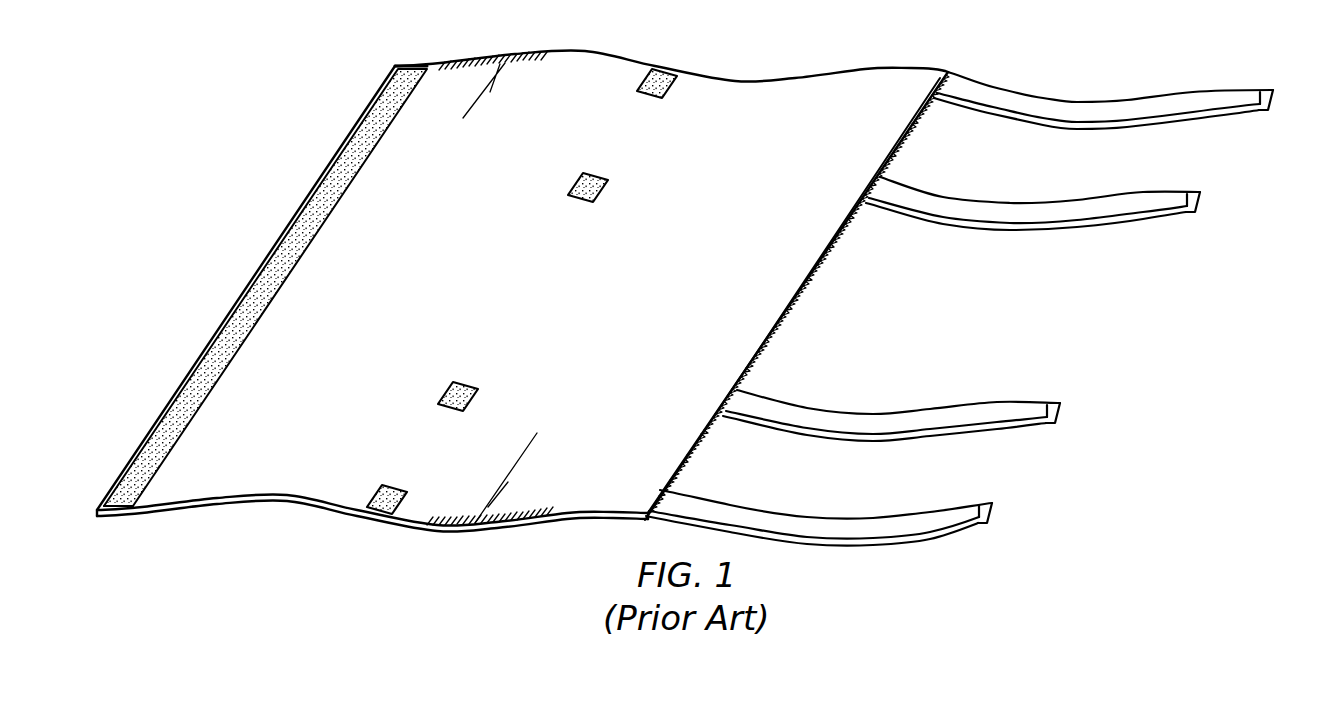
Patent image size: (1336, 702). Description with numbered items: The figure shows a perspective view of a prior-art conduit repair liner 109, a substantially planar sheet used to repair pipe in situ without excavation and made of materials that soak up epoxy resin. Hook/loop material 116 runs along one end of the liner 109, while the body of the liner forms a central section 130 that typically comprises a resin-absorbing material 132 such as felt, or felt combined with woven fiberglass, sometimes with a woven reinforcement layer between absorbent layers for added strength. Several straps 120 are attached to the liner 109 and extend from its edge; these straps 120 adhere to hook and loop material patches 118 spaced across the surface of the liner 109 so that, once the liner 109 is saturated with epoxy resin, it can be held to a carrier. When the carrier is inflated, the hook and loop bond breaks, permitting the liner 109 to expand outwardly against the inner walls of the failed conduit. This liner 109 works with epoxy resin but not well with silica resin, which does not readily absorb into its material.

The conduit repair liner 109 is at (1128, 456).
The hook/loop material 116 is at (394, 70).
The hook and loop material patches 118 is at (666, 70).
The straps 120 is at (1260, 92).
The central section 130 is at (858, 304).
The material 132 is at (496, 288).